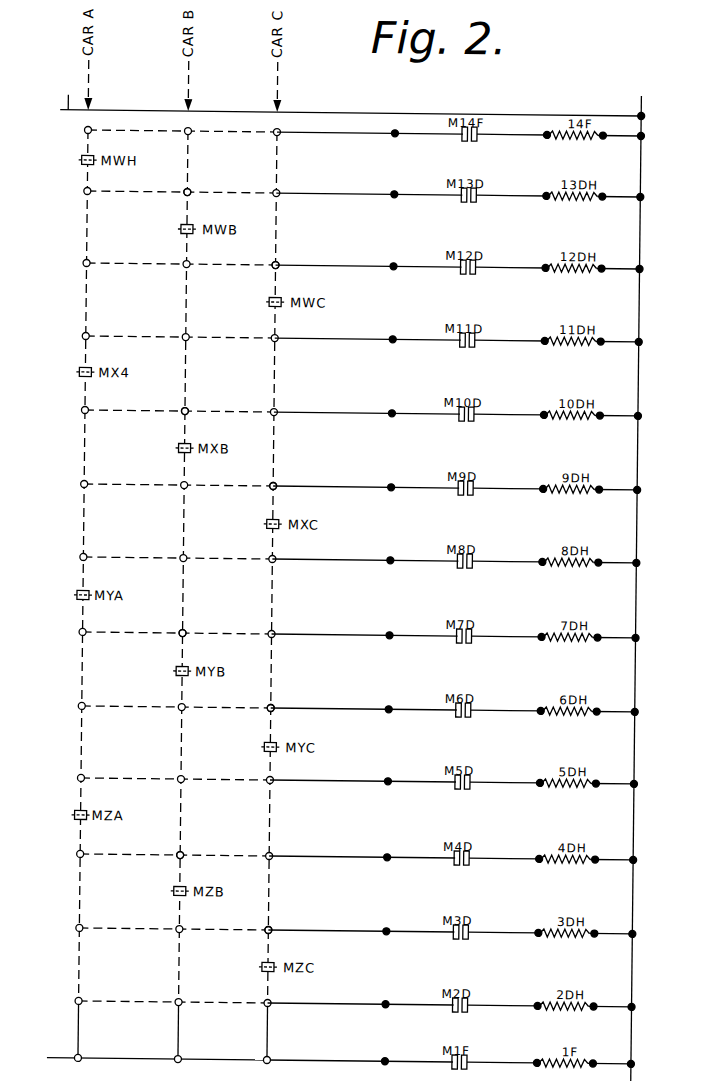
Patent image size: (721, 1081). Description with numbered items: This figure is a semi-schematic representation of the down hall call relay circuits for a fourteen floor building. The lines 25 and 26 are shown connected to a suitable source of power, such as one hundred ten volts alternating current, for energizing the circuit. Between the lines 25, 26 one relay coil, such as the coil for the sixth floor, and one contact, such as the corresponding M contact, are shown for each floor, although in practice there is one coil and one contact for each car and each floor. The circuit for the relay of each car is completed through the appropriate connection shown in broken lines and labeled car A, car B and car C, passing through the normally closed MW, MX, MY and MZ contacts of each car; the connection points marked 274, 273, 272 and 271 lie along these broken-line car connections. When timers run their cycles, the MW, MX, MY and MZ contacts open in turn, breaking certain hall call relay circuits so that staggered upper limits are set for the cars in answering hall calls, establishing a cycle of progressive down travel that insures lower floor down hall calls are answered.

The line 26 is at (68, 95).
The line 25 is at (60, 1052).
The car selector contacts 274 is at (244, 237).
The car selector contacts 273 is at (241, 457).
The car selector contacts 272 is at (239, 679).
The car selector contacts 271 is at (237, 901).